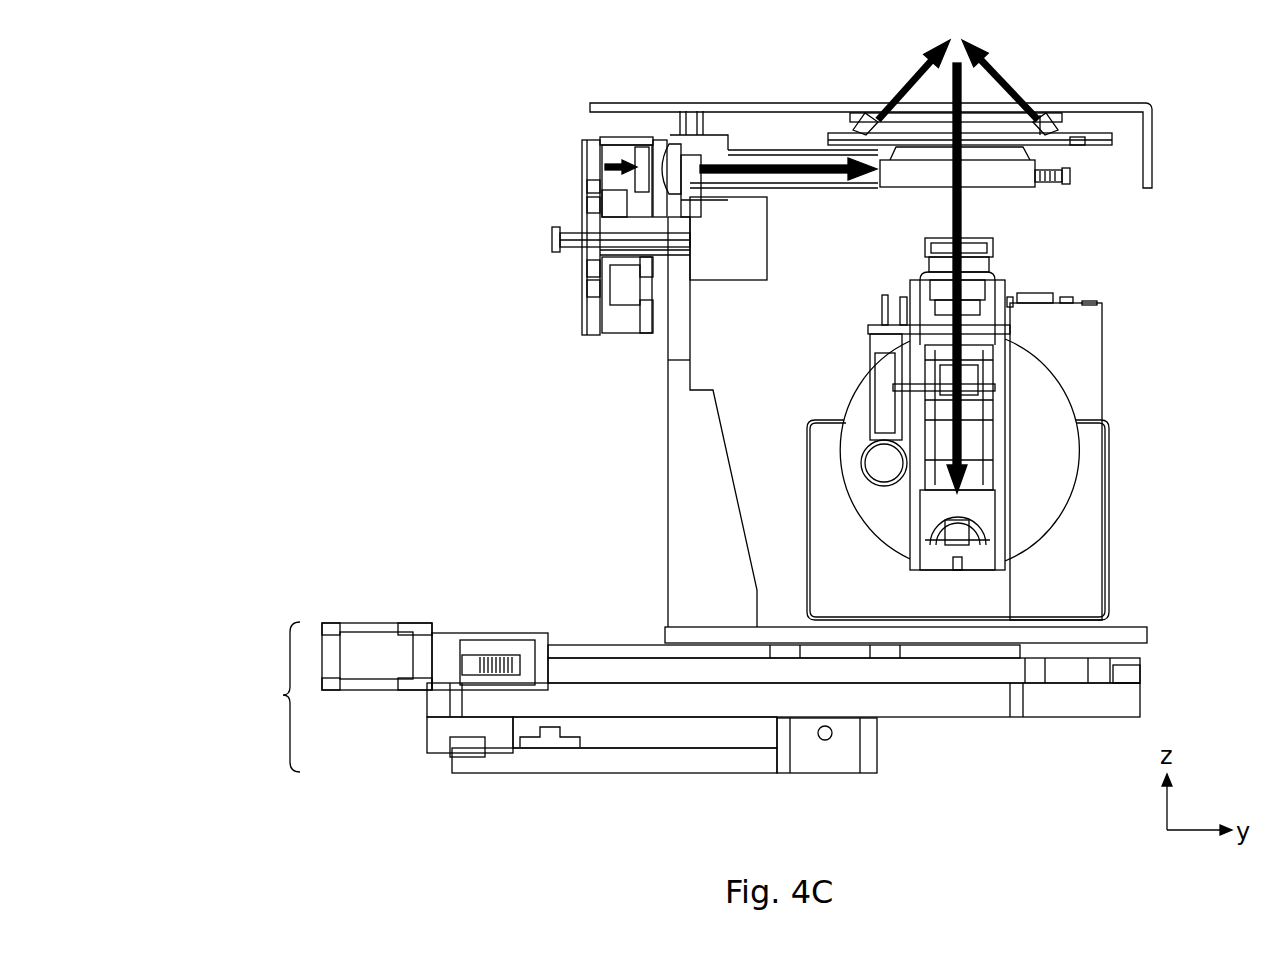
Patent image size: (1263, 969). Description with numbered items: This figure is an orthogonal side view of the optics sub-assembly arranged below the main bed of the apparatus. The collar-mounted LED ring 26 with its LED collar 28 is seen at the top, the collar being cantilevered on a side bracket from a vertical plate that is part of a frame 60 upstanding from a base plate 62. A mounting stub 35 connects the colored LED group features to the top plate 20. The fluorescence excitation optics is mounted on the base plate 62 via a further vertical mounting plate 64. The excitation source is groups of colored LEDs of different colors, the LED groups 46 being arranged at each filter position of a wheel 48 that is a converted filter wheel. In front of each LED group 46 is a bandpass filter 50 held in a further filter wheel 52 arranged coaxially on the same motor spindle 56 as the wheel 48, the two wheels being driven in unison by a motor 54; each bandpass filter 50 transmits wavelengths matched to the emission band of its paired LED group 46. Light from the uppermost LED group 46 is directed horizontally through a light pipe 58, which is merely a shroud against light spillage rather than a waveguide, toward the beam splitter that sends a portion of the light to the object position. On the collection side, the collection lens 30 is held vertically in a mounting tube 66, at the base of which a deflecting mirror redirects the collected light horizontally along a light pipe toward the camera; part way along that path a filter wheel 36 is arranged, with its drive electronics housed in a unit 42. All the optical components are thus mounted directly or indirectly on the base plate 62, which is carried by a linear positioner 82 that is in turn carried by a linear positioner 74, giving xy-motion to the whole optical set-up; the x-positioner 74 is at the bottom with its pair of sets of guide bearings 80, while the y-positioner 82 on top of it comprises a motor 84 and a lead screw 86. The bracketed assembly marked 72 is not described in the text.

The top plate 20 is at (600, 104).
The LED ring 26 is at (858, 116).
The LED collar 28 is at (1048, 114).
The collection lens 30 is at (993, 248).
The mounting stub 35 is at (686, 112).
The filter wheel 36 is at (1065, 503).
The unit 42 is at (1104, 335).
The LED groups 46 is at (592, 152).
The wheel 48 is at (593, 336).
The bandpass filter 50 is at (647, 334).
The filter wheel 52 is at (648, 140).
The motor 54 is at (737, 282).
The motor spindle 56 is at (552, 238).
The light pipe 58 is at (770, 151).
The frame 60 is at (637, 422).
The base plate 62 is at (1148, 632).
The vertical mounting plate 64 is at (680, 578).
The mounting tube 66 is at (1000, 395).
The drive unit 72 is at (372, 680).
The linear positioner 74 is at (645, 785).
The guide bearings 80 is at (437, 755).
The linear positioner 82 is at (415, 680).
The motor 84 is at (340, 628).
The lead screw 86 is at (500, 660).